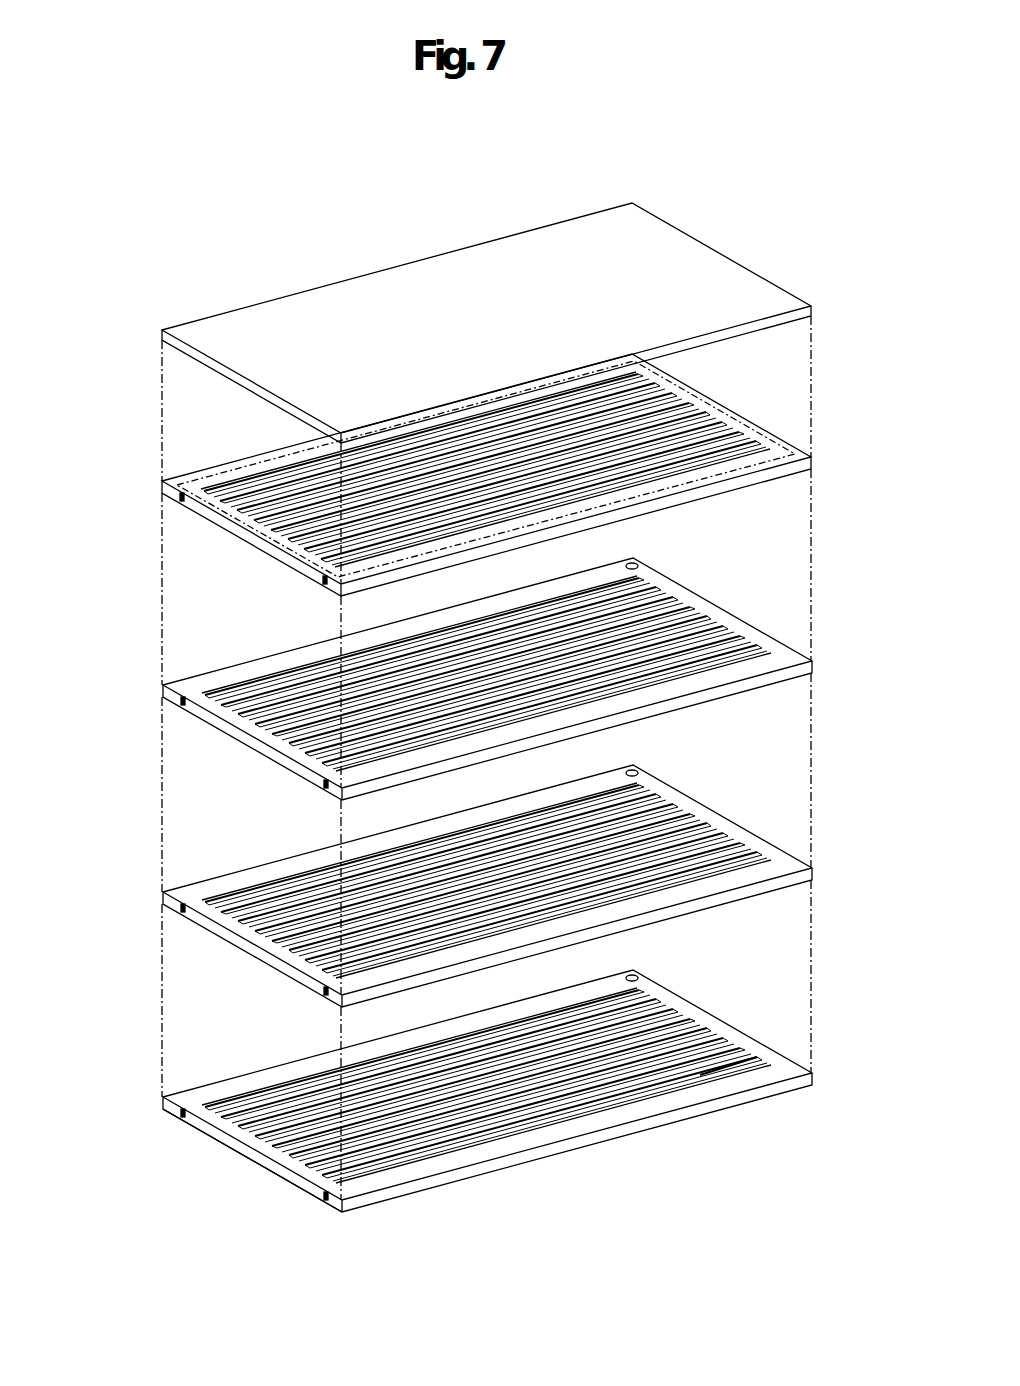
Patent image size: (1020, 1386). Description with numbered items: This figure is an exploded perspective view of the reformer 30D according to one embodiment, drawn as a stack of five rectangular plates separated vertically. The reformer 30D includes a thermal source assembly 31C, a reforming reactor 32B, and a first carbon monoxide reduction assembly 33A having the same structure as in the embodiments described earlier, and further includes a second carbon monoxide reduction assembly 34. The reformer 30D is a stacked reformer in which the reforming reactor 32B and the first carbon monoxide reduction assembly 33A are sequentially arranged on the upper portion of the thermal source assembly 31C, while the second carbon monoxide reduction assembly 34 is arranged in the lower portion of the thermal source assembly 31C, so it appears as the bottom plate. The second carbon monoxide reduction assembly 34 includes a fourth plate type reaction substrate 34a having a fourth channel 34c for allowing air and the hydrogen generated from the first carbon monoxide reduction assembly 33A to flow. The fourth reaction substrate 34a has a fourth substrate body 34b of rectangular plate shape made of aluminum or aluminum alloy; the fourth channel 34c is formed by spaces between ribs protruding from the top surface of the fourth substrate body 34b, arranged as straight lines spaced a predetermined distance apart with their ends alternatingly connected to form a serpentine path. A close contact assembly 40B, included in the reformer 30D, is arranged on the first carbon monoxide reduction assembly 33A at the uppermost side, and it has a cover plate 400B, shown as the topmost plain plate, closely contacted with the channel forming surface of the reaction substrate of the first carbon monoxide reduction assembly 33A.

The reformer 30D is at (486, 149).
The cover plate 400B is at (160, 336).
The close contact assembly 40B is at (83, 338).
The first carbon monoxide reduction assembly 33A is at (851, 376).
The reforming reactor 32B is at (851, 581).
The thermal source assembly 31C is at (851, 786).
The second carbon monoxide reduction assembly 34 is at (851, 991).
The fourth plate type reaction substrate 34a is at (158, 1077).
The fourth substrate body 34b is at (242, 1156).
The fourth channel 34c is at (748, 1062).